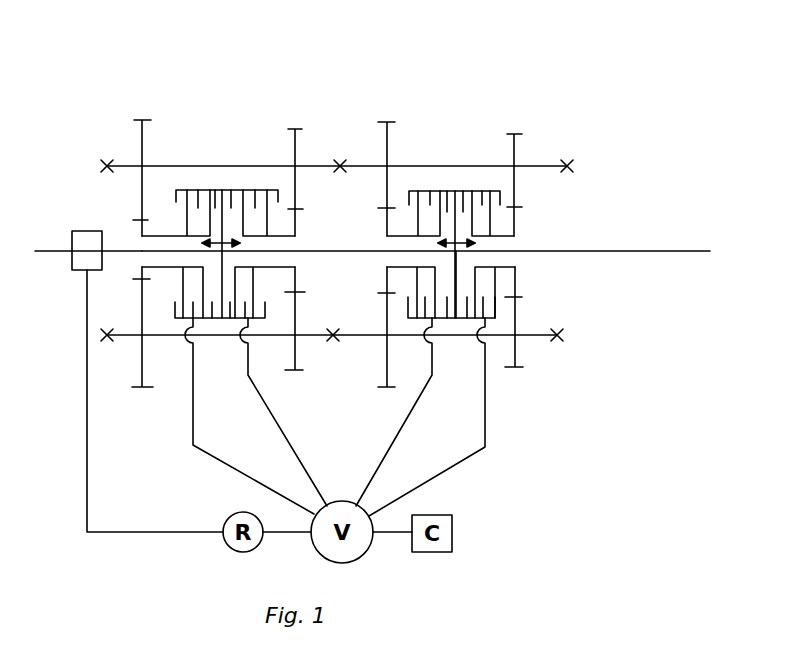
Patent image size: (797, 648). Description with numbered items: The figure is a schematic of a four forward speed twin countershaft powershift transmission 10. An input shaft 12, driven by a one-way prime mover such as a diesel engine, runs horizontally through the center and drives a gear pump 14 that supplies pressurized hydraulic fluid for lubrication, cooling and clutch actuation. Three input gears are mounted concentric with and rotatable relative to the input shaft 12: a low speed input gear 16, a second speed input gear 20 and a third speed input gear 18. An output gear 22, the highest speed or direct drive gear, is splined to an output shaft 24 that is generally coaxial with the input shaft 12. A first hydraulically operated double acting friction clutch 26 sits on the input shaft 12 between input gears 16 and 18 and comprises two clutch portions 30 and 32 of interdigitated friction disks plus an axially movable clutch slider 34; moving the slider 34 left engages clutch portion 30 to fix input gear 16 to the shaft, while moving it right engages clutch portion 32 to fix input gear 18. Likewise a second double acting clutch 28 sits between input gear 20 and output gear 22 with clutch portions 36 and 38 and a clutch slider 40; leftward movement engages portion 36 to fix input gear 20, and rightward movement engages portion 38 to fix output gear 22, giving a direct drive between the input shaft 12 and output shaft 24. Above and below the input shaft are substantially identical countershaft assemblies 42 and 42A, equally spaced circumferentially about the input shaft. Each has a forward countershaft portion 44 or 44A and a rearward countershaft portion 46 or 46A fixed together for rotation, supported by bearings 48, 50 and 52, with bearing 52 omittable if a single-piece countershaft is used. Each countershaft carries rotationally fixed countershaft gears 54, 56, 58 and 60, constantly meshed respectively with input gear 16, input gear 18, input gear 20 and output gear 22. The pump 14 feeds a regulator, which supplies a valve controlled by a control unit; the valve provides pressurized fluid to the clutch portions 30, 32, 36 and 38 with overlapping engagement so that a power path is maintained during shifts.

The powershift transmission 10 is at (562, 104).
The input shaft 12 is at (115, 248).
The gear pump 14 is at (72, 268).
The low speed input gear 16 is at (140, 230).
The third speed input gear 18 is at (296, 210).
The second speed input gear 20 is at (387, 223).
The output gear 22 is at (518, 293).
The output shaft 24 is at (568, 250).
The first double acting friction clutch 26 is at (233, 183).
The second double acting friction clutch 28 is at (467, 184).
The clutch portion 30 is at (193, 205).
The clutch portion 32 is at (270, 200).
The clutch slider 34 is at (228, 208).
The clutch portion 36 is at (415, 197).
The clutch portion 38 is at (483, 197).
The clutch slider 40 is at (465, 197).
The countershaft assembly 42 is at (357, 165).
The countershaft assembly 42A is at (357, 334).
The forward countershaft portion 44 is at (154, 165).
The forward countershaft portion 44A is at (166, 338).
The rearward countershaft portion 46 is at (532, 165).
The rearward countershaft portion 46A is at (543, 338).
The bearing 48 is at (108, 160).
The bearing 50 is at (340, 157).
The bearing 52 is at (572, 170).
The countershaft gear 54 is at (141, 140).
The countershaft gear 56 is at (297, 147).
The countershaft gear 58 is at (389, 137).
The countershaft gear 60 is at (520, 143).